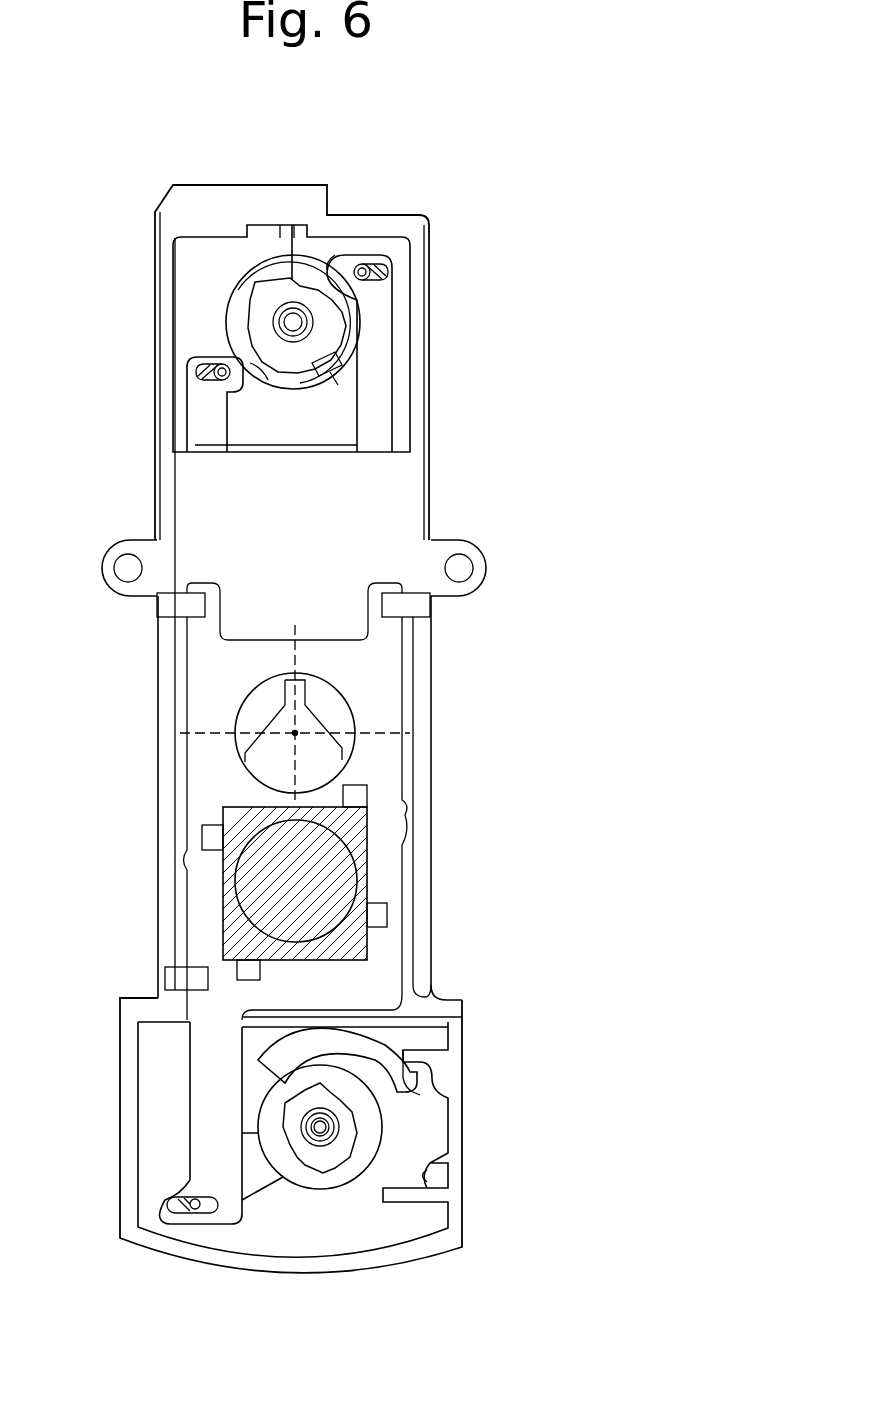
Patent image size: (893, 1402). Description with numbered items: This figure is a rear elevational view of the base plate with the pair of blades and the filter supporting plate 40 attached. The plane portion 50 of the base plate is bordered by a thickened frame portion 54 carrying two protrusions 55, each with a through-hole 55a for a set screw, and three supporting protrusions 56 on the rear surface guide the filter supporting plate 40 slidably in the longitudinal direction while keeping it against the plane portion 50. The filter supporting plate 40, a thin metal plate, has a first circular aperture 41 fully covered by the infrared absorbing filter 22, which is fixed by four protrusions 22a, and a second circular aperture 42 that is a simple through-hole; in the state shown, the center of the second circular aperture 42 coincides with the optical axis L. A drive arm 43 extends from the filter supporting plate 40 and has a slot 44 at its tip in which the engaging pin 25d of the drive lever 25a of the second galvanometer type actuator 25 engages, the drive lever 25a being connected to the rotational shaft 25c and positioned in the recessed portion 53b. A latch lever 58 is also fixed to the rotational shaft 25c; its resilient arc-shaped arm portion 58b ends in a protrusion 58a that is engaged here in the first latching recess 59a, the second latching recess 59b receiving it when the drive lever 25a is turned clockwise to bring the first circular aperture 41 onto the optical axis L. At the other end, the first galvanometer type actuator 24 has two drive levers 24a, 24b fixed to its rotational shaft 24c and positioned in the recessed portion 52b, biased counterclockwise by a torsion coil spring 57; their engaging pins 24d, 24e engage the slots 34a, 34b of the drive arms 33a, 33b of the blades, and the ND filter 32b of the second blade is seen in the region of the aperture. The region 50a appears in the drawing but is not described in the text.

The infrared absorbing filter 22 is at (233, 937).
The protrusion 22a is at (355, 795).
The first galvanometer type actuator 24 is at (225, 293).
The drive lever 24a is at (325, 270).
The drive lever 24b is at (250, 363).
The rotational shaft 24c is at (323, 383).
The engaging pin 24d is at (362, 272).
The engaging pin 24e is at (213, 363).
The second galvanometer type actuator 25 is at (313, 1193).
The drive lever 25a is at (253, 1170).
The rotational shaft 25c is at (325, 1150).
The engaging pin 25d is at (195, 1213).
The ND filter 32b is at (325, 757).
The drive arm 33a is at (377, 357).
The drive arm 33b is at (207, 417).
The slot 34a is at (393, 267).
The slot 34b is at (190, 370).
The filter supporting plate 40 is at (228, 752).
The first circular aperture 41 is at (353, 850).
The second circular aperture 42 is at (333, 693).
The drive arm 43 is at (213, 1087).
The slot 44 is at (160, 1197).
The plane portion 50 is at (205, 490).
The recess 50a is at (347, 433).
The recessed portion 52b is at (207, 260).
The recessed portion 53b is at (170, 1143).
The frame portion 54 is at (165, 680).
The protrusion 55 is at (110, 545).
The through-hole 55a is at (118, 572).
The supporting protrusion 56 is at (178, 605).
The torsion coil spring 57 is at (276, 240).
The latch lever 58 is at (373, 1052).
The protrusion 58a is at (420, 1060).
The arc-shaped arm portion 58b is at (392, 1057).
The first latching recess 59a is at (400, 1090).
The second latching recess 59b is at (413, 1173).
The optical axis L is at (297, 717).